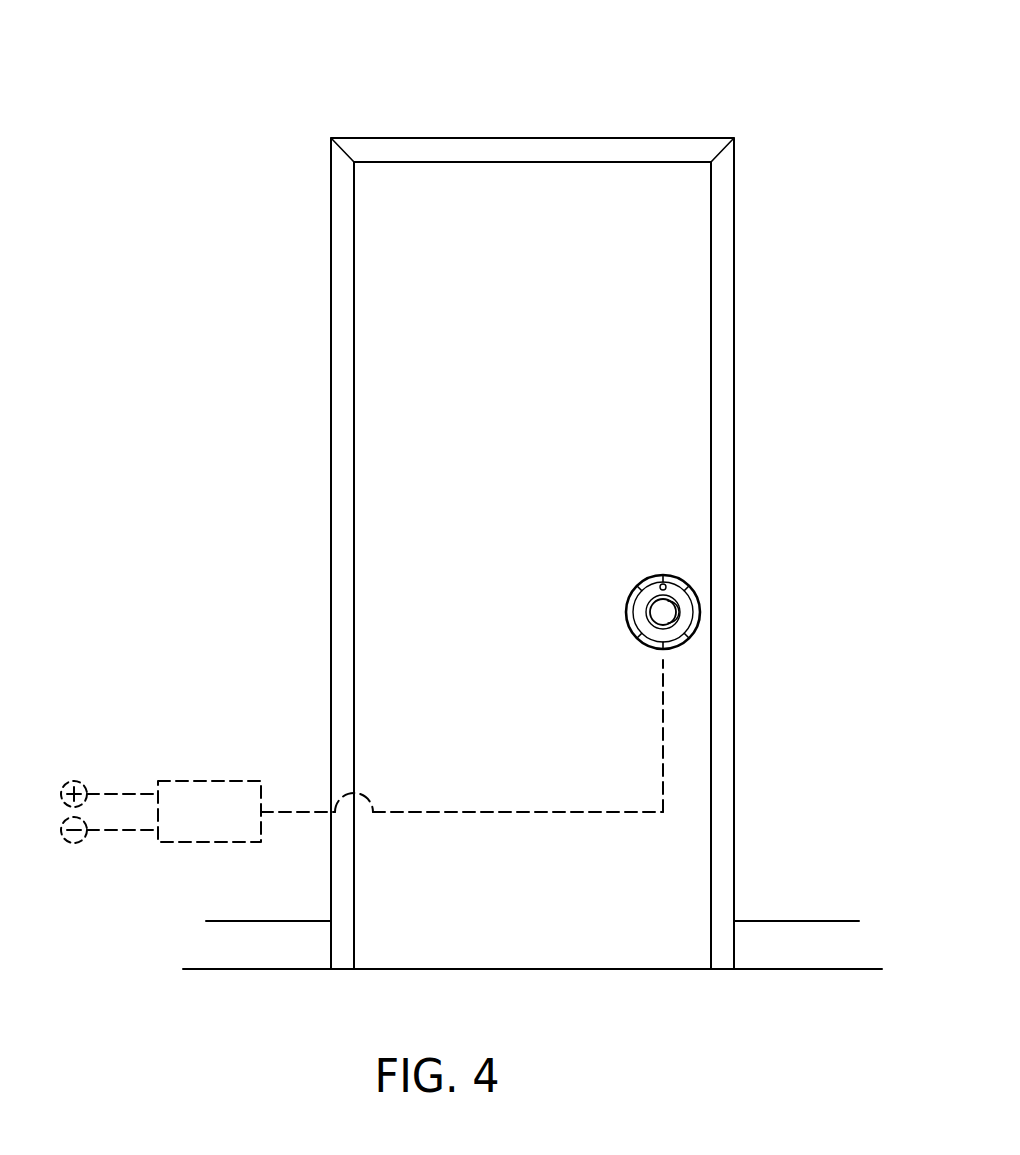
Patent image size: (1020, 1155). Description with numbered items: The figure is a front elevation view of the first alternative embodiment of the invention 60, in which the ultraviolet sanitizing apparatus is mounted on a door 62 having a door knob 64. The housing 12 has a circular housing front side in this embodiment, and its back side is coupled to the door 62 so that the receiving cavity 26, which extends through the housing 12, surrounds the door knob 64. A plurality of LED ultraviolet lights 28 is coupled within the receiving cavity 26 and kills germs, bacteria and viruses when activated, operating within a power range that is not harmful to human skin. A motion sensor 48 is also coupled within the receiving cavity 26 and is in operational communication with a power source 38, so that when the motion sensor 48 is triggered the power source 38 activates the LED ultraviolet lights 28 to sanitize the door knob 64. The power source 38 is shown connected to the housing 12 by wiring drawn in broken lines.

The first alternative embodiment of the invention 60 is at (800, 109).
The door 62 is at (665, 380).
The housing 12 is at (700, 592).
The receiving cavity 26 is at (643, 597).
The motion sensor 48 is at (667, 583).
The door knob 64 is at (663, 612).
The LED ultraviolet lights 28 is at (688, 635).
The power source 38 is at (235, 802).